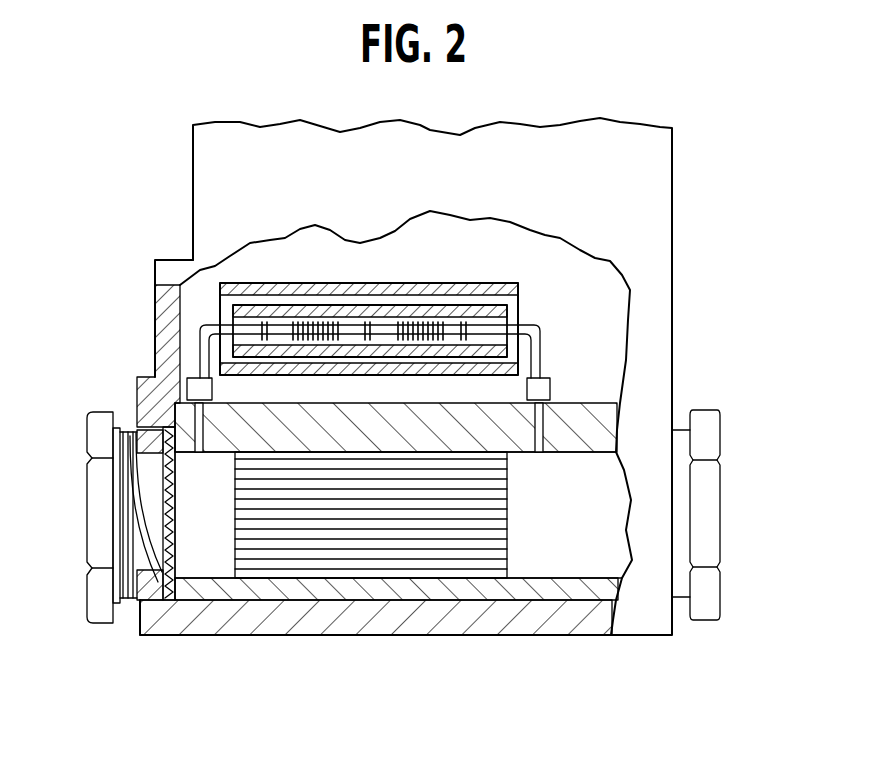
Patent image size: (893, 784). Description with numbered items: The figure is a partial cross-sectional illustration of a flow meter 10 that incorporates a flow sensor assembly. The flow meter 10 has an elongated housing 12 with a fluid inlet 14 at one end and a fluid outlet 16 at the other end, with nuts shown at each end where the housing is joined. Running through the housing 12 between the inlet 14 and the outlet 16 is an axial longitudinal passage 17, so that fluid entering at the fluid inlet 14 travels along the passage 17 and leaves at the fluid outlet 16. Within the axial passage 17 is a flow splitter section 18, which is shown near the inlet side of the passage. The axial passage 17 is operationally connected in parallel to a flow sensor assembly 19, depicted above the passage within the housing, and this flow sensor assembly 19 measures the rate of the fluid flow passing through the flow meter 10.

The flow meter 10 is at (712, 268).
The elongated housing 12 is at (144, 376).
The fluid inlet 14 is at (92, 432).
The fluid outlet 16 is at (712, 437).
The axial longitudinal passage 17 is at (416, 515).
The flow splitter section 18 is at (230, 560).
The flow sensor assembly 19 is at (416, 272).